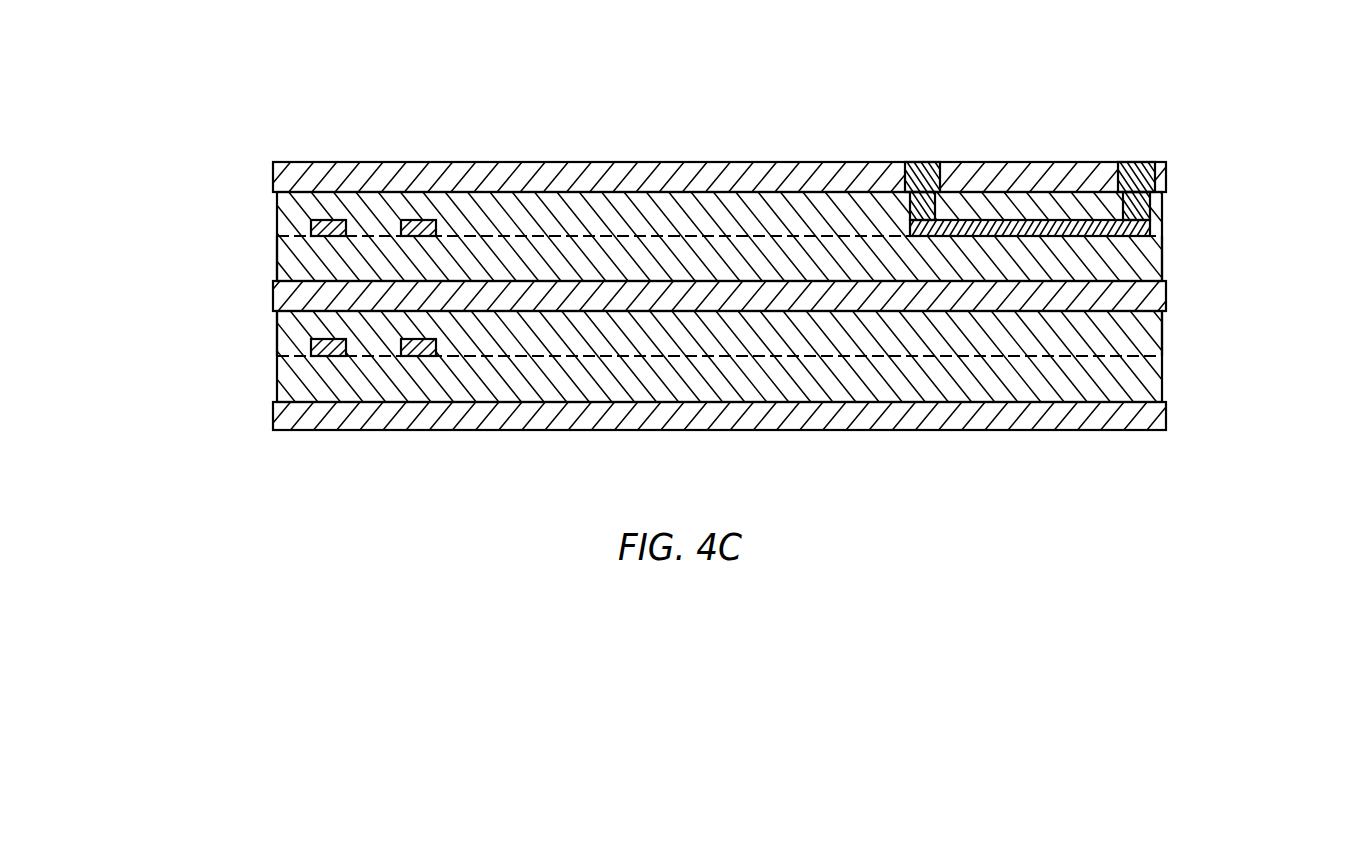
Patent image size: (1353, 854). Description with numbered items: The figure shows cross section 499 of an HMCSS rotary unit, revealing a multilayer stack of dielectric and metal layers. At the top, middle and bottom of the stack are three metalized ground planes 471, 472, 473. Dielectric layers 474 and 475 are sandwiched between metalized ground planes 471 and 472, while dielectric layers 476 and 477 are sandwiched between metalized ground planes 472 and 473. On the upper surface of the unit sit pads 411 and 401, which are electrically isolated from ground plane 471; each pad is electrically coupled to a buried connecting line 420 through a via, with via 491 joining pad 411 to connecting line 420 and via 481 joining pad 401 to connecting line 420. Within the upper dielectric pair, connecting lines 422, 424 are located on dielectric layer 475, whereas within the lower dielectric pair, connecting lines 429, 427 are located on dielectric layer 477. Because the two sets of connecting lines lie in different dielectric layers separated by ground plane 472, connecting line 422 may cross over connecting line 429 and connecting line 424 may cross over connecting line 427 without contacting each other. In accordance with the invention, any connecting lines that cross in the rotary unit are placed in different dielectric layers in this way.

The cross section 499 is at (1033, 63).
The metalized ground plane 471 is at (273, 178).
The metalized ground plane 472 is at (273, 302).
The metalized ground plane 473 is at (273, 415).
The dielectric layer 474 is at (277, 215).
The dielectric layer 475 is at (277, 260).
The dielectric layer 476 is at (277, 337).
The dielectric layer 477 is at (277, 380).
The connecting line 422 is at (337, 220).
The connecting line 424 is at (431, 220).
The connecting line 427 is at (437, 345).
The connecting line 429 is at (340, 345).
The pad 411 is at (923, 163).
The pad 401 is at (1135, 162).
The via 491 is at (910, 208).
The via 481 is at (1135, 207).
The connecting line 420 is at (1110, 228).